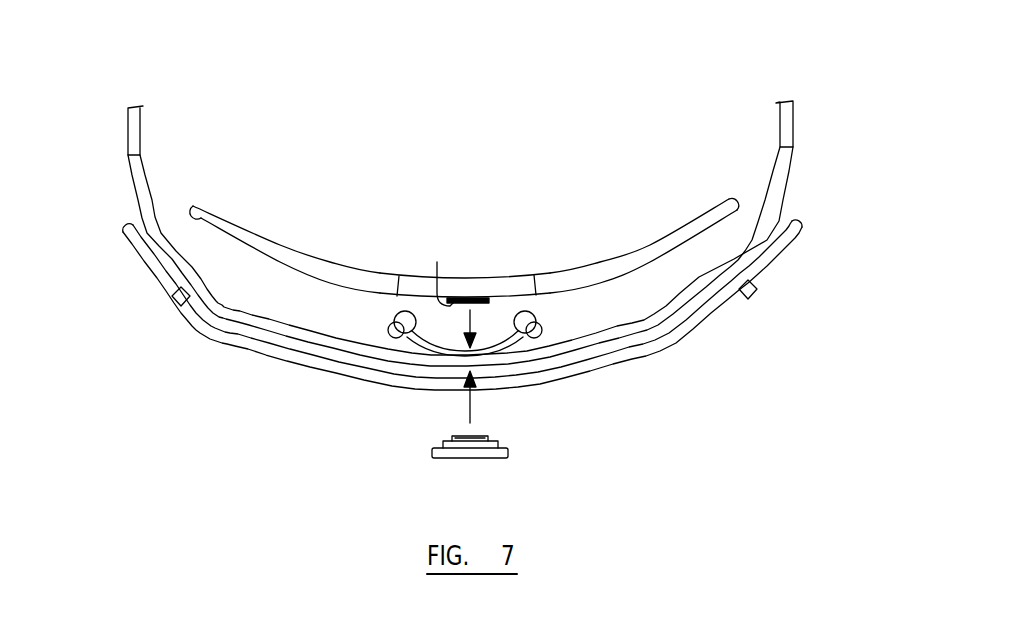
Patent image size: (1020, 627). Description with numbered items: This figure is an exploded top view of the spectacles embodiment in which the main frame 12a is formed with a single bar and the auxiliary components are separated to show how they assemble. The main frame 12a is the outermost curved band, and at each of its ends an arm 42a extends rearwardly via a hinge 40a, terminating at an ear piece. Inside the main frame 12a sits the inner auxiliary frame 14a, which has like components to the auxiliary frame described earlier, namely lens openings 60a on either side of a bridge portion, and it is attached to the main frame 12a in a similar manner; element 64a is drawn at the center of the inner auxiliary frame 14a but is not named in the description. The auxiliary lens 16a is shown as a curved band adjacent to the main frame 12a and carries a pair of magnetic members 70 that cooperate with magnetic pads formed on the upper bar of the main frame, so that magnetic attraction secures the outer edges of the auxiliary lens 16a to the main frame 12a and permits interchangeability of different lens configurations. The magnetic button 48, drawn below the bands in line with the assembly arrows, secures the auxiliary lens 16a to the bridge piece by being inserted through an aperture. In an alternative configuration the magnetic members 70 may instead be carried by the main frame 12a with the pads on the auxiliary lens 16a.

The main frame 12a is at (188, 273).
The inner auxiliary frame 14a is at (352, 265).
The auxiliary lens 16a is at (245, 348).
The hinge 40a is at (130, 167).
The arm 42a is at (127, 110).
The magnetic button 48 is at (490, 462).
The lens openings 60a is at (237, 225).
The hook 64a is at (452, 270).
The magnetic members 70 is at (172, 302).